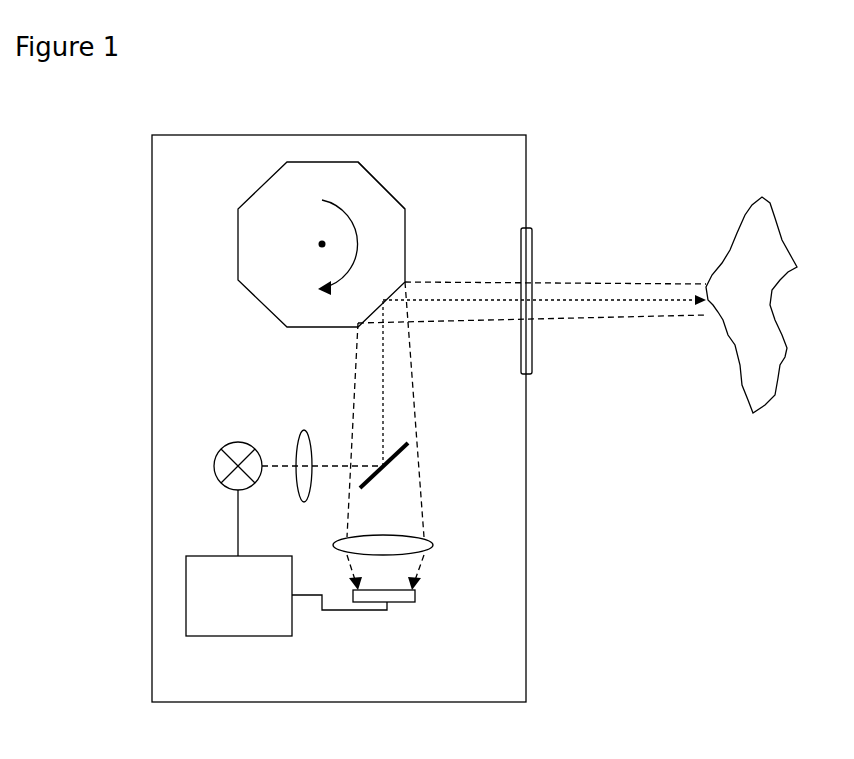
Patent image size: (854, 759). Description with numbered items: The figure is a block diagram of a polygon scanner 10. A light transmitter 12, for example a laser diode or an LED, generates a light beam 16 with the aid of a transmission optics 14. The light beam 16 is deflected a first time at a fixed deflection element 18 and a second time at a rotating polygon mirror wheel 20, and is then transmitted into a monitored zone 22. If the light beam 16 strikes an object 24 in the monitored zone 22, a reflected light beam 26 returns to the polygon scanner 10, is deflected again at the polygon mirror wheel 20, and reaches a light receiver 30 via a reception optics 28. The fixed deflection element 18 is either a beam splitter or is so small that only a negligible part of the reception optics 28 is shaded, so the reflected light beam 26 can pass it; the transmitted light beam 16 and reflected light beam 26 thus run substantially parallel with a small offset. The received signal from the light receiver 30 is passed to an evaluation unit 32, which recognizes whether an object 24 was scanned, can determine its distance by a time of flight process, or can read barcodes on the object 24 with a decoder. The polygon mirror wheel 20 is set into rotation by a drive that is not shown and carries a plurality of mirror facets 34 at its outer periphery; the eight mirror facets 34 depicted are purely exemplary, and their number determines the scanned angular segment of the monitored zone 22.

The polygon scanner 10 is at (510, 90).
The light transmitter 12 is at (232, 460).
The transmission optics 14 is at (302, 478).
The light beam 16 is at (632, 300).
The fixed deflection element 18 is at (400, 461).
The polygon mirror wheel 20 is at (257, 241).
The monitored zone 22 is at (683, 215).
The object 24 is at (768, 233).
The reflected light beam 26 is at (562, 282).
The reception optics 28 is at (410, 535).
The light receiver 30 is at (388, 602).
The evaluation unit 32 is at (222, 610).
The mirror facets 34 is at (404, 250).